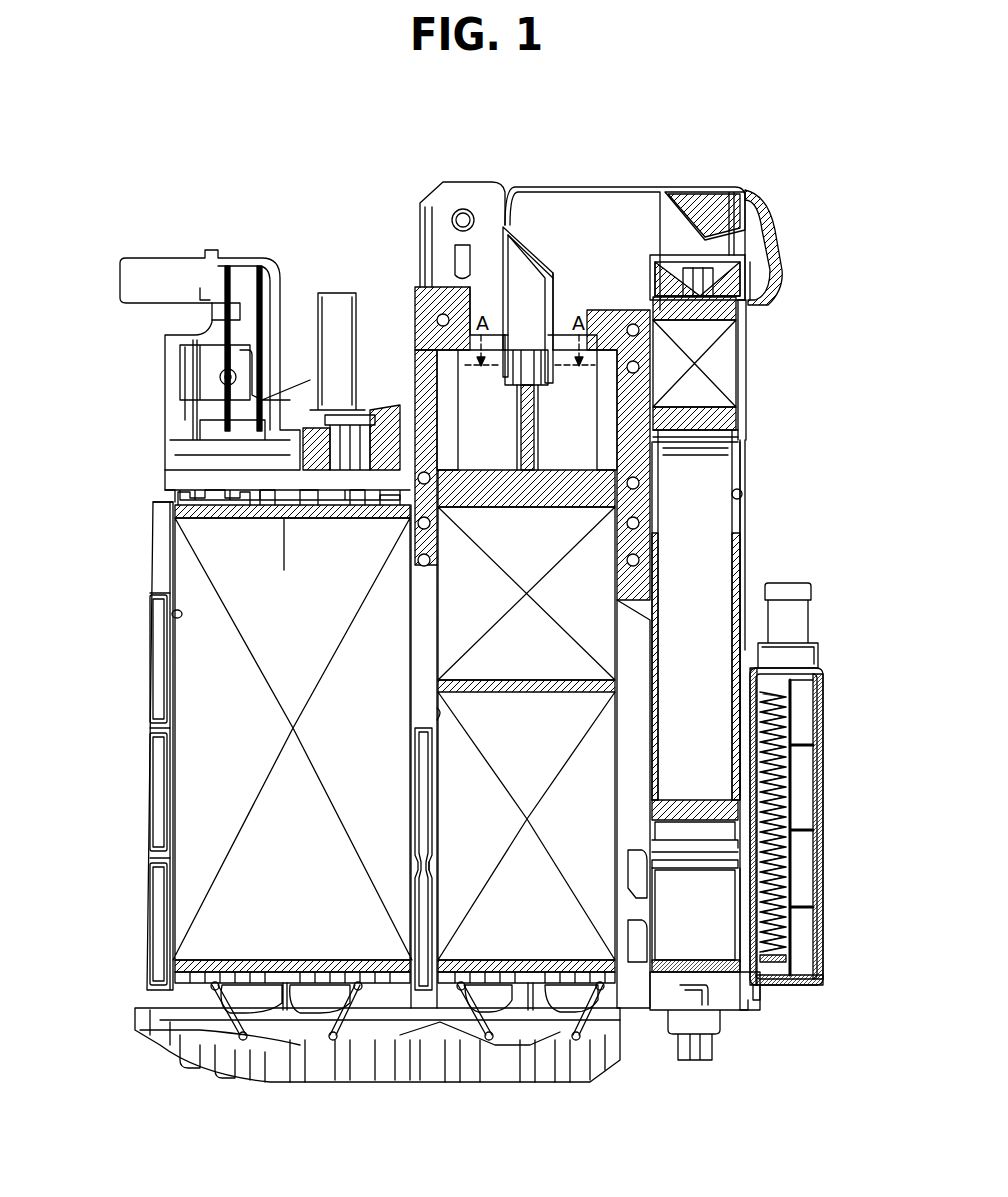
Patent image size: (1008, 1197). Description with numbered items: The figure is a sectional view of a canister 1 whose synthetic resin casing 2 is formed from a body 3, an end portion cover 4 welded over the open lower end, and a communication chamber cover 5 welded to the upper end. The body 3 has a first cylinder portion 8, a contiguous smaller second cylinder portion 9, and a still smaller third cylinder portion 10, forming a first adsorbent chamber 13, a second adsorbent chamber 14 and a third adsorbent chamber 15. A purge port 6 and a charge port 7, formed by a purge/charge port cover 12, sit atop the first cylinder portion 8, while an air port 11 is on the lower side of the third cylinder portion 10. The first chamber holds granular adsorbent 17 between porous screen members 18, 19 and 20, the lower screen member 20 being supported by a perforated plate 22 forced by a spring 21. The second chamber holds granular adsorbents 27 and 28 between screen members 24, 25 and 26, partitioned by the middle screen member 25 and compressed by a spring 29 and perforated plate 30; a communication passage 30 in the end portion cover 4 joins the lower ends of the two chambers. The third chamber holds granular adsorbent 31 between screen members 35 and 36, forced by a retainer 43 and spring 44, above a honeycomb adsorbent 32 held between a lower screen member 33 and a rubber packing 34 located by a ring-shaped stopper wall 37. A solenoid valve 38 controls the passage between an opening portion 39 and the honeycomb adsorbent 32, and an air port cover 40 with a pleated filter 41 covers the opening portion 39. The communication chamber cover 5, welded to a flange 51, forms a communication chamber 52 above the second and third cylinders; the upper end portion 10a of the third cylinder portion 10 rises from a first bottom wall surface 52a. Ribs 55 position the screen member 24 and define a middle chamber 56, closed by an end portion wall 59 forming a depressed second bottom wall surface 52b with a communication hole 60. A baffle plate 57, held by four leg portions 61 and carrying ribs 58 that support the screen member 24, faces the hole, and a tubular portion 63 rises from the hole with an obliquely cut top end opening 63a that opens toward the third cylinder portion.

The canister 1 is at (383, 228).
The casing 2 is at (148, 488).
The body 3 is at (160, 660).
The end portion cover 4 is at (556, 1058).
The communication chamber cover 5 is at (648, 187).
The purge port 6 is at (348, 312).
The charge port 7 is at (180, 275).
The first cylinder portion 8 is at (166, 745).
The second cylinder portion 9 is at (424, 791).
The third cylinder portion 10 is at (745, 528).
The upper end portion of the third cylinder portion 10a is at (662, 263).
The air port 11 is at (787, 602).
The purge/charge port cover 12 is at (366, 408).
The first adsorbent chamber 13 is at (172, 617).
The second adsorbent chamber 14 is at (432, 715).
The third adsorbent chamber 15 is at (742, 493).
The granular adsorbent 17 is at (192, 816).
The porous screen member 18 is at (344, 512).
The porous screen member 19 is at (246, 512).
The porous screen member 20 is at (312, 960).
The spring 21 is at (356, 984).
The perforated plate 22 is at (285, 977).
The screen member 24 is at (536, 492).
The screen member 25 is at (537, 694).
The screen member 26 is at (536, 960).
The granular adsorbent 27 is at (432, 616).
The granular adsorbent 28 is at (428, 850).
The spring 29 is at (462, 978).
The perforated plate / communication passage 30 is at (450, 1032).
The granular adsorbent 31 is at (740, 360).
The honeycomb adsorbent 32 is at (668, 600).
The lower side porous screen member 33 is at (672, 810).
The cylindrical rubber packing 34 is at (740, 441).
The screen member 35 is at (722, 316).
The screen member 36 is at (715, 405).
The ring-shaped stopper wall 37 is at (744, 421).
The cylindrical solenoid valve 38 is at (668, 922).
The opening portion 39 is at (738, 925).
The air port cover 40 is at (790, 985).
The filter 41 is at (748, 752).
The retainer 43 is at (736, 270).
The spring 44 is at (735, 226).
The flange 51 is at (778, 283).
The communication chamber 52 is at (588, 200).
The first bottom wall surface 52a is at (632, 310).
The second bottom wall surface 52b is at (493, 348).
The ribs 55 is at (447, 376).
The middle chamber 56 is at (497, 486).
The middle baffle plate 57 is at (521, 390).
The ribs 58 is at (540, 452).
The end portion wall 59 is at (556, 345).
The communication hole 60 is at (537, 342).
The leg portions 61 is at (540, 370).
The tubular portion 63 is at (503, 252).
The top end opening 63a is at (538, 248).